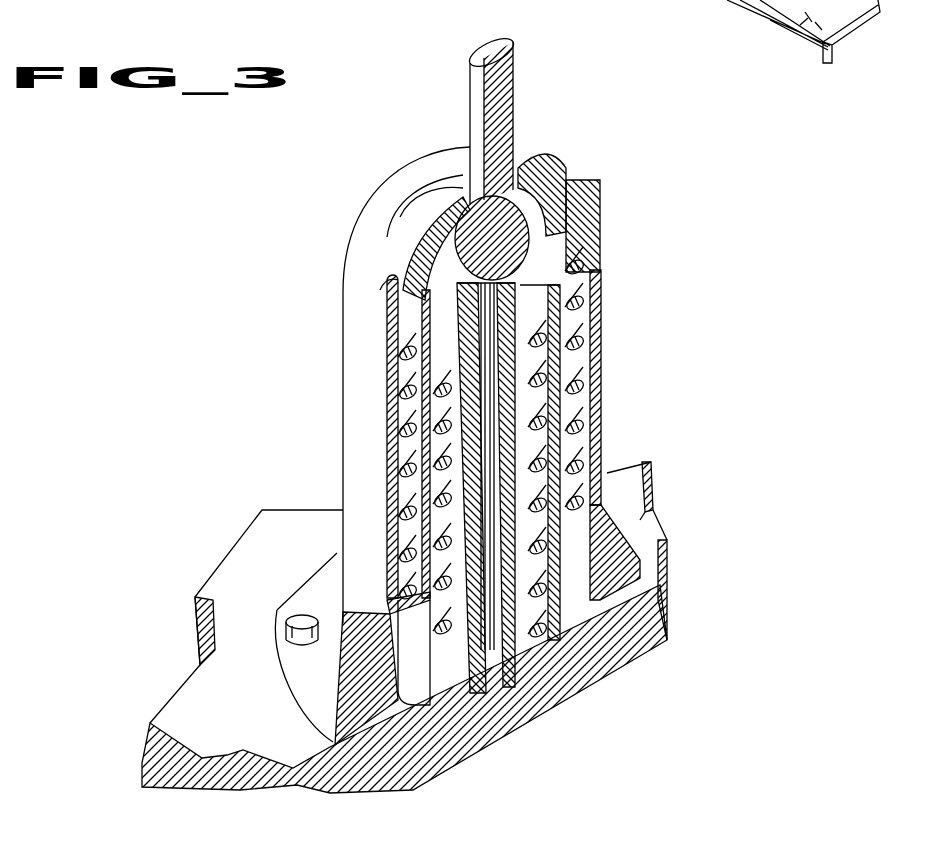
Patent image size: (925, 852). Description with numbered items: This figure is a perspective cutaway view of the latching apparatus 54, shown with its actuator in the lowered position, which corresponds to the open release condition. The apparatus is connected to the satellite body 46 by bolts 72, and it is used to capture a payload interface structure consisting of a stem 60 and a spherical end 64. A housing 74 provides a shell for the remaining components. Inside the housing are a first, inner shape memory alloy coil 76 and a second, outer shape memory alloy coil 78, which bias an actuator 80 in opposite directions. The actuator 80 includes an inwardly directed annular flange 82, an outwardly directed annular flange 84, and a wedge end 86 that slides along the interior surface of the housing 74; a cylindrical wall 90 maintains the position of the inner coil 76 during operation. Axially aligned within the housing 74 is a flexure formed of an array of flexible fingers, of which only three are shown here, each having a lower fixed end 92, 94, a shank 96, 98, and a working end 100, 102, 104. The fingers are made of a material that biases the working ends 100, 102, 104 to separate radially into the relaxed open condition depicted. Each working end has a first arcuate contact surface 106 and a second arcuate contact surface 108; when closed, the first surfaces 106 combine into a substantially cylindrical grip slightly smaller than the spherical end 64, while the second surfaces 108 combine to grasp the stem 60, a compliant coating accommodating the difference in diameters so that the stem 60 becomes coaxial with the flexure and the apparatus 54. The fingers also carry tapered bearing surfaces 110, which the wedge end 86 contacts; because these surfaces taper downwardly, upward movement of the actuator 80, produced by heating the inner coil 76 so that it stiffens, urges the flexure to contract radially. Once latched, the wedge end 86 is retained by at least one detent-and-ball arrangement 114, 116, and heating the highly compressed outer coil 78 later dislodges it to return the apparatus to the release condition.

The satellite body 46 is at (197, 717).
The latching apparatus 54 is at (782, 196).
The stem 60 is at (498, 93).
The spherical end 64 is at (468, 203).
The bolts 72 is at (298, 622).
The housing 74 is at (369, 342).
The inner shape memory alloy coil 76 is at (604, 403).
The outer shape memory alloy coil 78 is at (395, 465).
The actuator 80 is at (578, 313).
The inwardly directed annular flange 82 is at (578, 352).
The outwardly directed annular flange 84 is at (612, 517).
The wedge end 86 is at (565, 283).
The cylindrical wall 90 is at (600, 583).
The lower fixed end 92 is at (555, 620).
The lower fixed end 94 is at (505, 705).
The shank 96 is at (604, 440).
The shank 98 is at (425, 443).
The working end 100 is at (520, 162).
The working end 102 is at (412, 213).
The working end 104 is at (432, 166).
The first arcuate contact surface 106 is at (565, 216).
The second arcuate contact surface 108 is at (575, 166).
The tapered bearing surface 110 is at (384, 383).
The detent-and-ball arrangement 114 is at (578, 190).
The detent-and-ball arrangement 116 is at (395, 292).